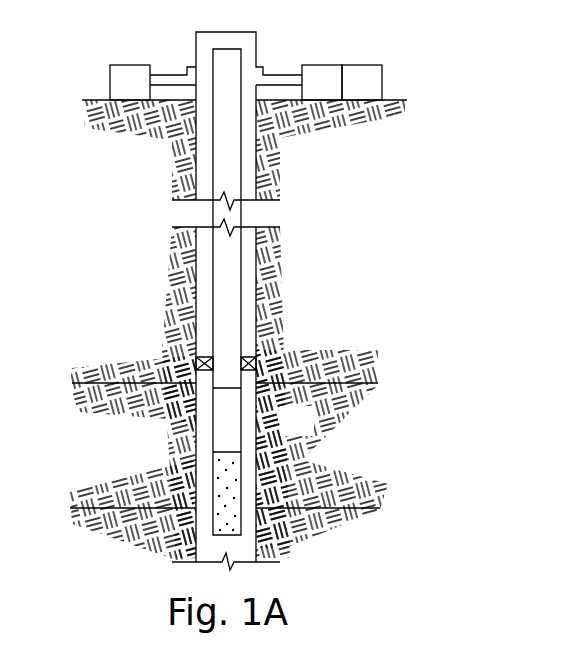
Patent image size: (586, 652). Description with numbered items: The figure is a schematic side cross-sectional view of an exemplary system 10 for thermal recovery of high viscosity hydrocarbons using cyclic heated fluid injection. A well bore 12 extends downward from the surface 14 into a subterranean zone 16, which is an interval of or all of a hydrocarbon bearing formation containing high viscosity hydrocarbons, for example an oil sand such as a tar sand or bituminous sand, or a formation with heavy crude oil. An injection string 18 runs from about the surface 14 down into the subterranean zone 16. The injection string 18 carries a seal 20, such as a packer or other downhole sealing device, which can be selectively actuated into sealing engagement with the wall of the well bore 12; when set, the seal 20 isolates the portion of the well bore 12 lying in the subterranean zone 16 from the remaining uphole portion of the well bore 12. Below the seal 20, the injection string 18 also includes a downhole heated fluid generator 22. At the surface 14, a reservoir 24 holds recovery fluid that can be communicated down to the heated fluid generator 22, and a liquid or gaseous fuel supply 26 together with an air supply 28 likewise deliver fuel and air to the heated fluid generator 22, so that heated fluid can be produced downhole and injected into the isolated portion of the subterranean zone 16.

The system 10 is at (438, 270).
The well bore 12 is at (246, 160).
The surface 14 is at (393, 88).
The subterranean zone 16 is at (312, 436).
The injection string 18 is at (245, 277).
The seal 20 is at (250, 338).
The downhole heated fluid generator 22 is at (223, 428).
The reservoir 24 is at (110, 81).
The fuel supply 26 is at (318, 65).
The air supply 28 is at (382, 73).